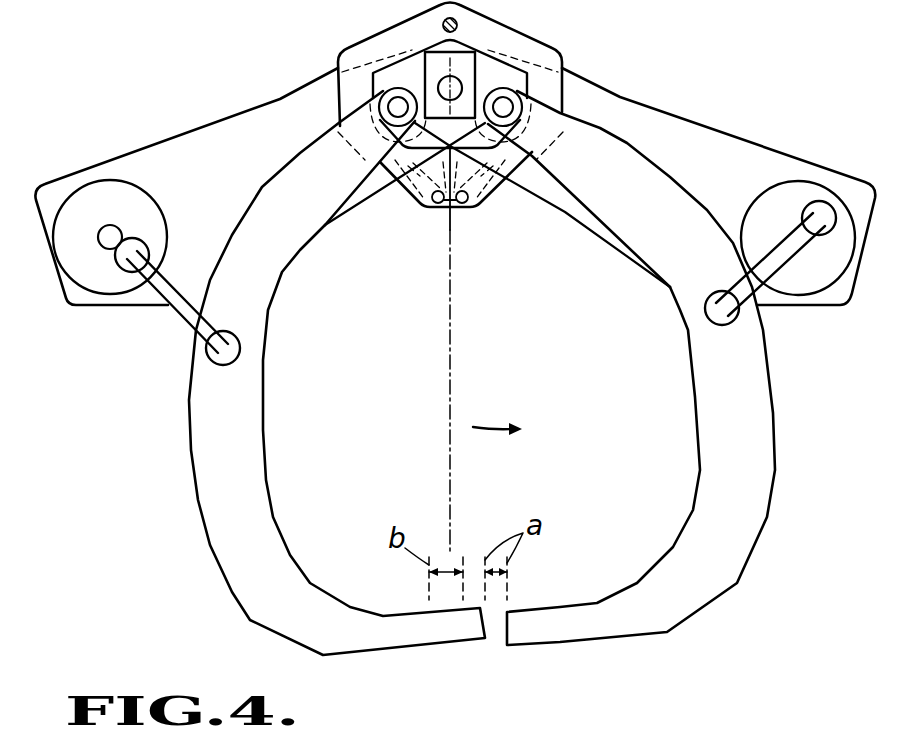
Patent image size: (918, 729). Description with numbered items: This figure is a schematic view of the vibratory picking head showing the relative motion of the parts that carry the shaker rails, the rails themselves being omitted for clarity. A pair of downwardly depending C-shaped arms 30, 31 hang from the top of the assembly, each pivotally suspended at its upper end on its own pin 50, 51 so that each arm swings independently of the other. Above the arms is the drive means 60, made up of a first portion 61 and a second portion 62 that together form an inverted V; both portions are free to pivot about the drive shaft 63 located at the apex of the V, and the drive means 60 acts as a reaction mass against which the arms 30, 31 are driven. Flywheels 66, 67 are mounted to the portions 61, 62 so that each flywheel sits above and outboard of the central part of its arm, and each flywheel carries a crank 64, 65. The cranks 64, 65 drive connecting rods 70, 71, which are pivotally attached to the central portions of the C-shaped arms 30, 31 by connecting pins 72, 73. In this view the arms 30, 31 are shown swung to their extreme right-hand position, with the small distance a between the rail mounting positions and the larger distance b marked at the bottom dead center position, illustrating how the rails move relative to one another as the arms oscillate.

The C-shaped arm 30 is at (267, 399).
The C-shaped arm 31 is at (693, 393).
The pin 50 is at (393, 100).
The pin 51 is at (517, 100).
The drive means 60 is at (676, 112).
The first portion 61 is at (242, 122).
The second portion 62 is at (737, 145).
The drive shaft 63 is at (463, 88).
The crank 64 is at (128, 262).
The crank 65 is at (822, 210).
The flywheel 66 is at (156, 200).
The flywheel 67 is at (793, 187).
The connecting rod 70 is at (175, 312).
The connecting rod 71 is at (772, 270).
The connecting pin 72 is at (229, 331).
The connecting pin 73 is at (717, 292).